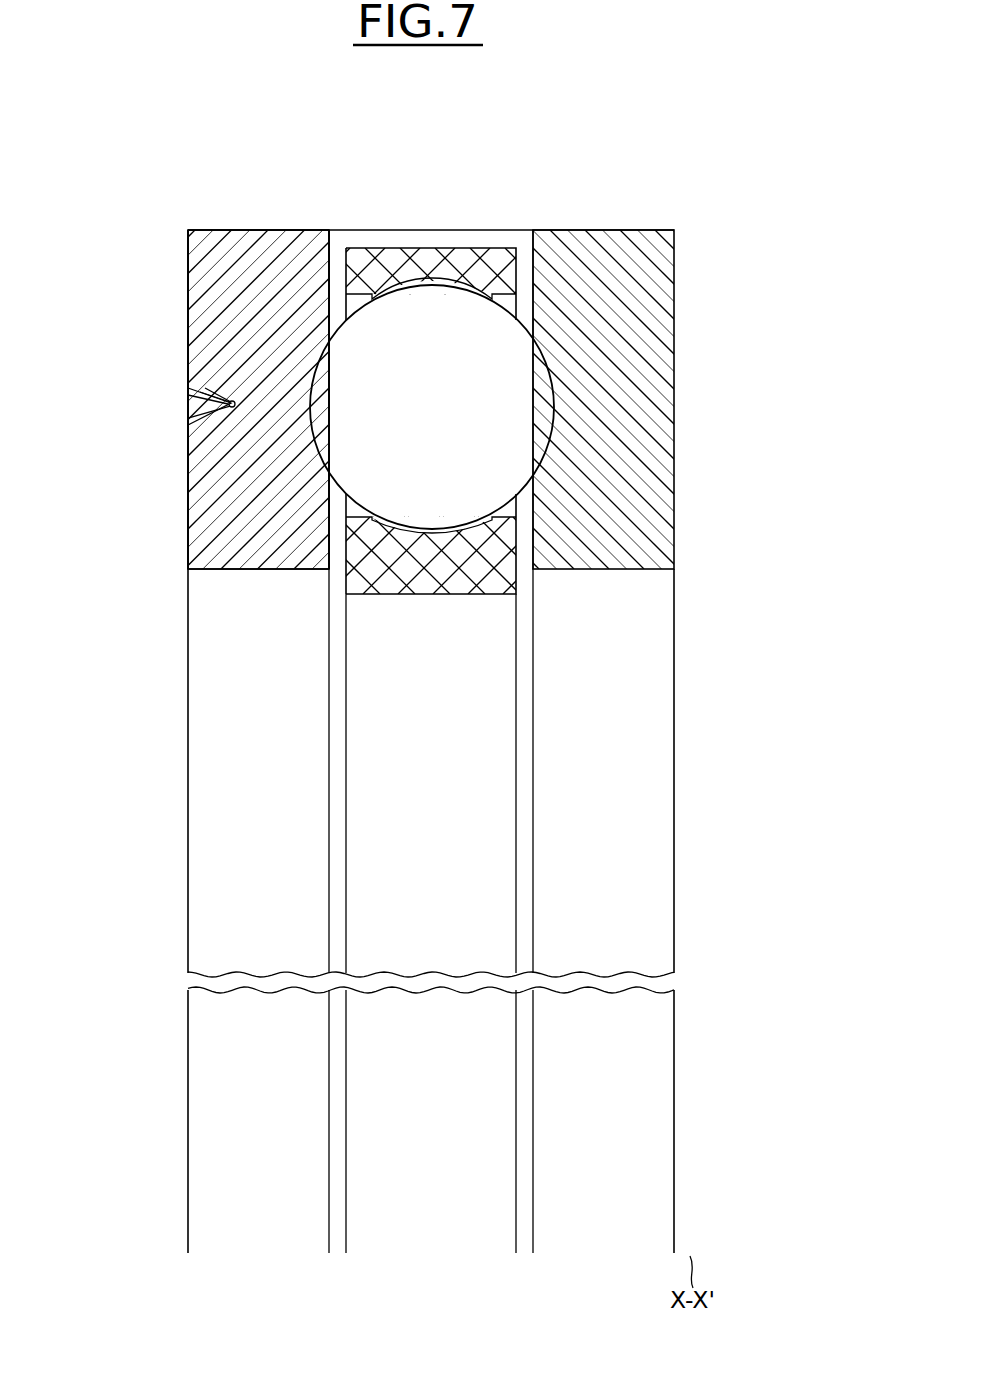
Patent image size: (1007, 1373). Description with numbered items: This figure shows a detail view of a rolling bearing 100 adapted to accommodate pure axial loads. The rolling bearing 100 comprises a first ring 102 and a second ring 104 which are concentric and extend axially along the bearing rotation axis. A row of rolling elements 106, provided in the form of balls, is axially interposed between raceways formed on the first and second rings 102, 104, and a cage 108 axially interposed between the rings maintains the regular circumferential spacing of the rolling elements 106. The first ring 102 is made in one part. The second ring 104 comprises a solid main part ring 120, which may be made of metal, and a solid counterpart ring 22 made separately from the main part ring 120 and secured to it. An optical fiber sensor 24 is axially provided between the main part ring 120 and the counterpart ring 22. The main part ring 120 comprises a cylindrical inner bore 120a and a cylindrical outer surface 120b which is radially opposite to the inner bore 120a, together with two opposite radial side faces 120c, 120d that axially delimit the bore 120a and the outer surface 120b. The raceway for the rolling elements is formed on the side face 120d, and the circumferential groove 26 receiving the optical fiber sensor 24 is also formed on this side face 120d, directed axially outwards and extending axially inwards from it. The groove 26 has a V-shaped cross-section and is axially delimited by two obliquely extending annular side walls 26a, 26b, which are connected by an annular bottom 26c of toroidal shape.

The rolling bearing 100 is at (666, 157).
The first ring 102 is at (688, 377).
The second ring 104 is at (180, 292).
The rolling elements 106 is at (459, 416).
The cage 108 is at (446, 250).
The main part ring 120 is at (281, 248).
The cylindrical inner bore 120a is at (258, 570).
The cylindrical outer surface 120b is at (234, 229).
The radial side face 120c is at (188, 538).
The radial side face 120d is at (330, 257).
The counterpart ring 22 is at (178, 392).
The optical fiber sensor 24 is at (233, 407).
The groove 26 is at (192, 408).
The annular side wall 26a is at (230, 412).
The annular side wall 26b is at (224, 402).
The annular bottom 26c is at (216, 398).